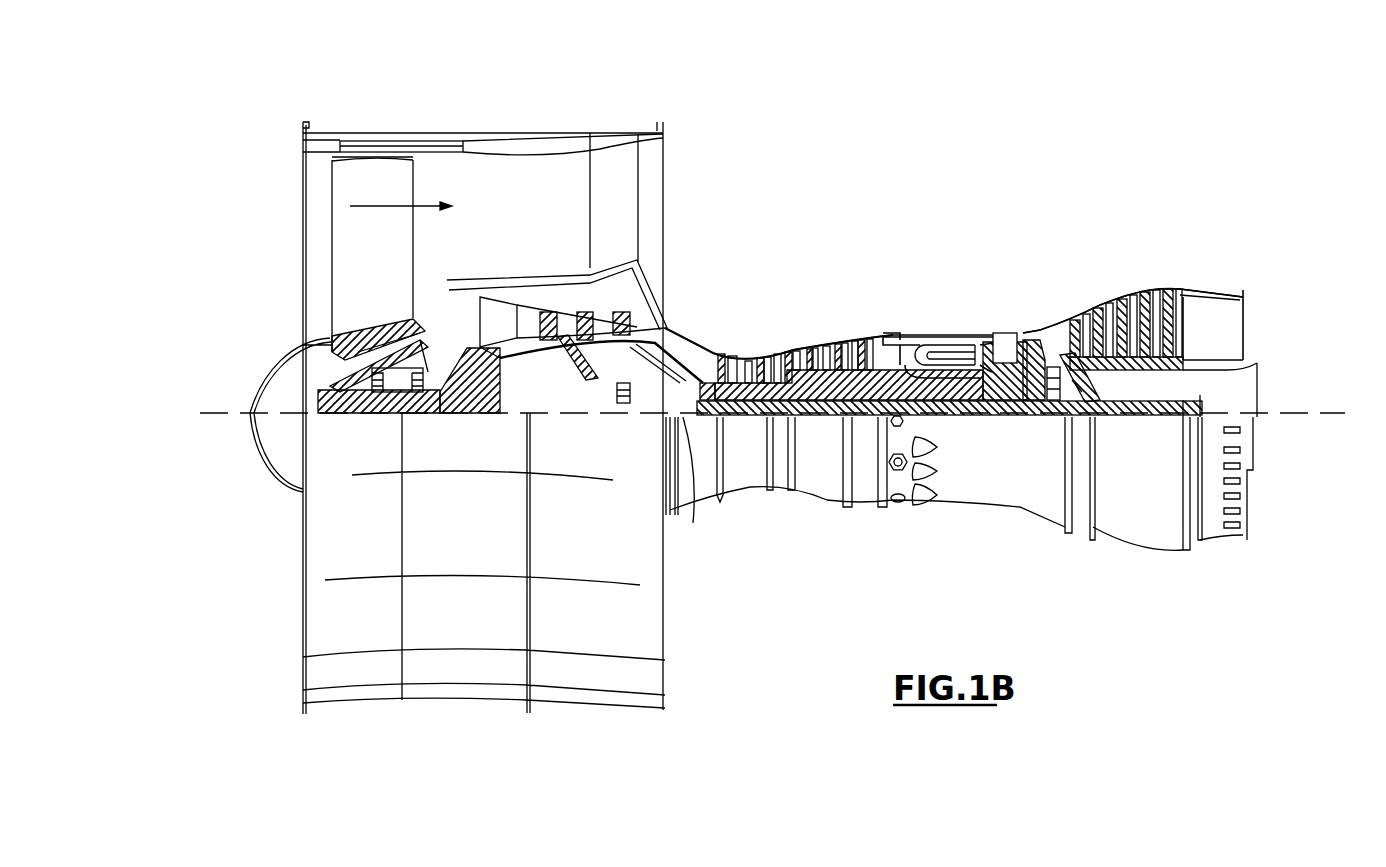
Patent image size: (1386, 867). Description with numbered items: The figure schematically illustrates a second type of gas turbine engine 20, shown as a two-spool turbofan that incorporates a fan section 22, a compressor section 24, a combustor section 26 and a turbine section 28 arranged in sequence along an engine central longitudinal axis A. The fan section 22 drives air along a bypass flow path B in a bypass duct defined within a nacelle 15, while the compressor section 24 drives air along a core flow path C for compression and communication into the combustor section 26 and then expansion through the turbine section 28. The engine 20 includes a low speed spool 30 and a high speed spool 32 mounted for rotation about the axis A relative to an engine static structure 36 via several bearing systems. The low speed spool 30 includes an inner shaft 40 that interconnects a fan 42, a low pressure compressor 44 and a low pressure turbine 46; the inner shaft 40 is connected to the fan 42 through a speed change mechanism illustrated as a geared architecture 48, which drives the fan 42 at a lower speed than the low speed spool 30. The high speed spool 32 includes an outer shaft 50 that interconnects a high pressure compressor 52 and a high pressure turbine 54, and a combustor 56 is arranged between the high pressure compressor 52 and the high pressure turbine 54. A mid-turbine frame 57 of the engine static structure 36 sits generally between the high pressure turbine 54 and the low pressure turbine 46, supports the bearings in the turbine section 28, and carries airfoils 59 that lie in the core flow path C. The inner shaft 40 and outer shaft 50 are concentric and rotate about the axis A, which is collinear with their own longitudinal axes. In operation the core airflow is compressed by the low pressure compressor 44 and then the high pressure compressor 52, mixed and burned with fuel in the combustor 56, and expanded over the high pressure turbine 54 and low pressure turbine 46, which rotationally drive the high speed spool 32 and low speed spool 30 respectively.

The nacelle 15 is at (485, 136).
The gas turbine engine 20 is at (948, 182).
The fan section 22 is at (413, 123).
The compressor section 24 is at (716, 323).
The combustor section 26 is at (937, 312).
The turbine section 28 is at (1084, 275).
The low speed spool 30 is at (823, 430).
The high speed spool 32 is at (863, 383).
The engine static structure 36 is at (863, 515).
The inner shaft 40 is at (693, 523).
The fan 42 is at (388, 261).
The low pressure compressor 44 is at (583, 327).
The low pressure turbine 46 is at (1130, 310).
The geared architecture 48 is at (492, 400).
The outer shaft 50 is at (950, 396).
The high pressure compressor 52 is at (797, 390).
The high pressure turbine 54 is at (1003, 333).
The combustor 56 is at (937, 358).
The mid-turbine frame 57 is at (1048, 328).
The airfoils 59 is at (1078, 387).
The engine central longitudinal axis A is at (1333, 413).
The bypass flow path B is at (387, 205).
The core flow path C is at (490, 320).